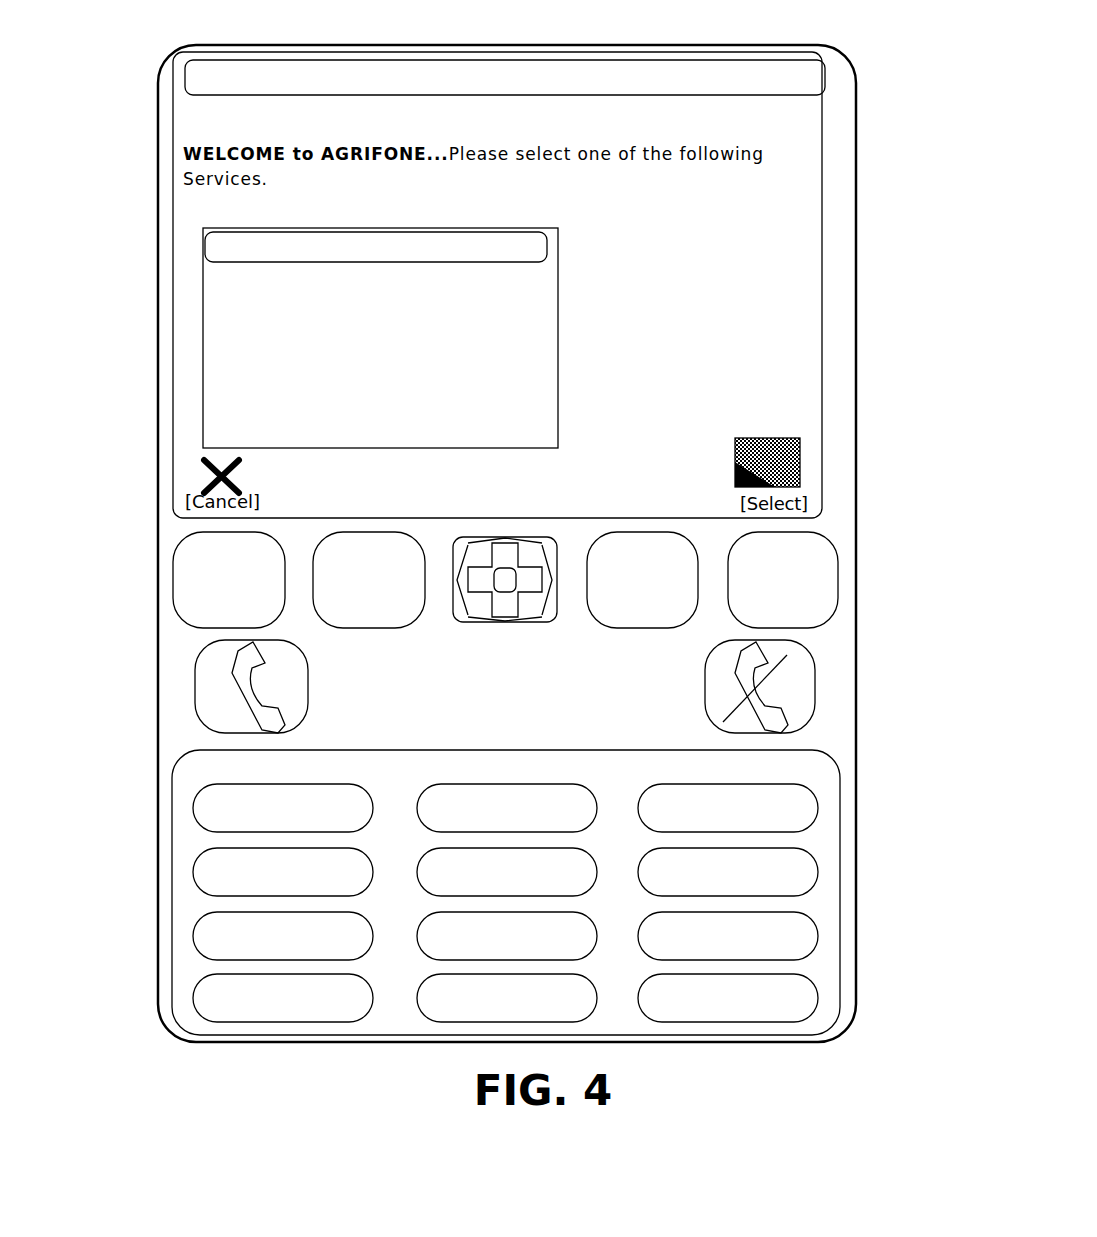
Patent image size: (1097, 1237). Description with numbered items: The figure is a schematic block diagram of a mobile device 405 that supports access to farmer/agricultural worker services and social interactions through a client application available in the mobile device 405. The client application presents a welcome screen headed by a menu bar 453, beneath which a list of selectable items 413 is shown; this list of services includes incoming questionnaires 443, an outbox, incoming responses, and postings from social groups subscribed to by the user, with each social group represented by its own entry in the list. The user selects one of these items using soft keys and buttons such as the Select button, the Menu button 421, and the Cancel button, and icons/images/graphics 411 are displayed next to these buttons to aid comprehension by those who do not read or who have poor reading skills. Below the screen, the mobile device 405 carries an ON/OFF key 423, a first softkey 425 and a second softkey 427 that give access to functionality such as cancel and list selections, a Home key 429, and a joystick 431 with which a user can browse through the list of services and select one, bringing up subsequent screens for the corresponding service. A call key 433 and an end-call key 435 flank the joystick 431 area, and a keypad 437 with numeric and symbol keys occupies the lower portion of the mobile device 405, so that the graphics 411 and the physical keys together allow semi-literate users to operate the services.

The mobile device 405 is at (925, 30).
The menu bar 453 is at (576, 89).
The incoming questionnaires 443 is at (533, 257).
The list of selectable items 413 is at (308, 338).
The icons/images/graphics 411 is at (793, 435).
The menu soft key label 421 is at (540, 512).
The ON/OFF key 423 is at (210, 606).
The softkey 425 is at (350, 616).
The softkey 427 is at (662, 616).
The home key 429 is at (764, 606).
The joystick 431 is at (505, 622).
The call key 433 is at (300, 696).
The end call key 435 is at (806, 696).
The keypad 437 is at (563, 781).